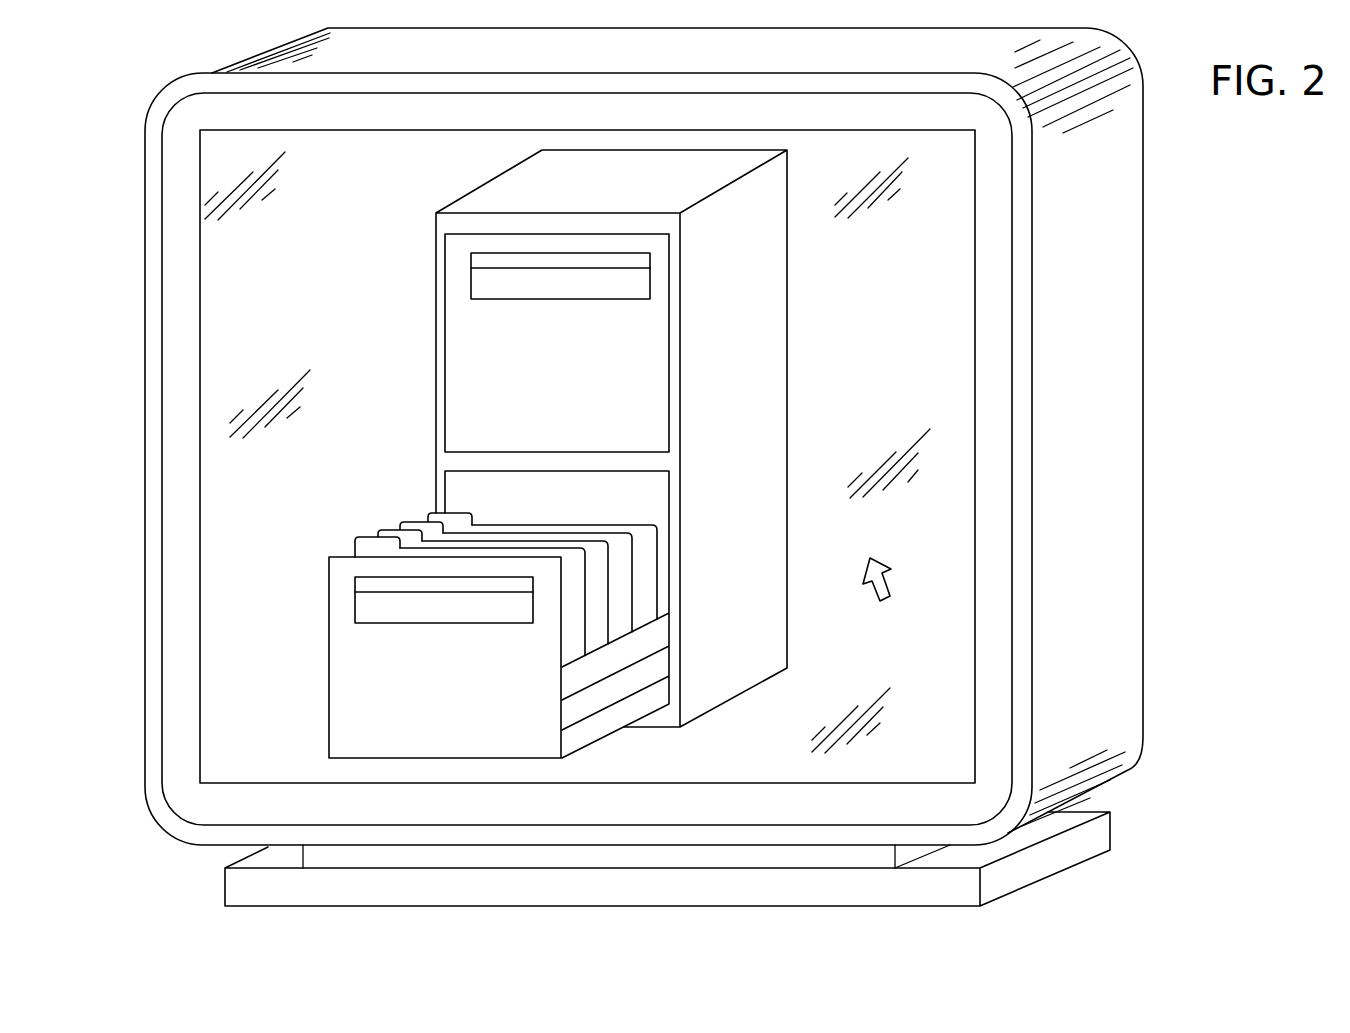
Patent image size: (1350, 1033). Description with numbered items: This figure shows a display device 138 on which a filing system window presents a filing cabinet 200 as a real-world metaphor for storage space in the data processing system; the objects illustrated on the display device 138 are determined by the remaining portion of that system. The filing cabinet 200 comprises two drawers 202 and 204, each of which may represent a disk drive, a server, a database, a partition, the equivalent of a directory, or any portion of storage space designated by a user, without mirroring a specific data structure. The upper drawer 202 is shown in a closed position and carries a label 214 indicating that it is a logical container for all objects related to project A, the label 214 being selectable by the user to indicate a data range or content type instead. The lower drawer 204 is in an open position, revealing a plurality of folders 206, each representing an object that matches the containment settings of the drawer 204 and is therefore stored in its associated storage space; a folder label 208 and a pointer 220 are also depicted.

The display device 138 is at (1097, 863).
The filing cabinet 200 is at (388, 258).
The drawer 202 is at (572, 454).
The drawer 204 is at (404, 657).
The plurality of folders 206 is at (452, 605).
The folder label 208 is at (355, 605).
The label 214 is at (470, 288).
The pointer cursor 220 is at (890, 585).